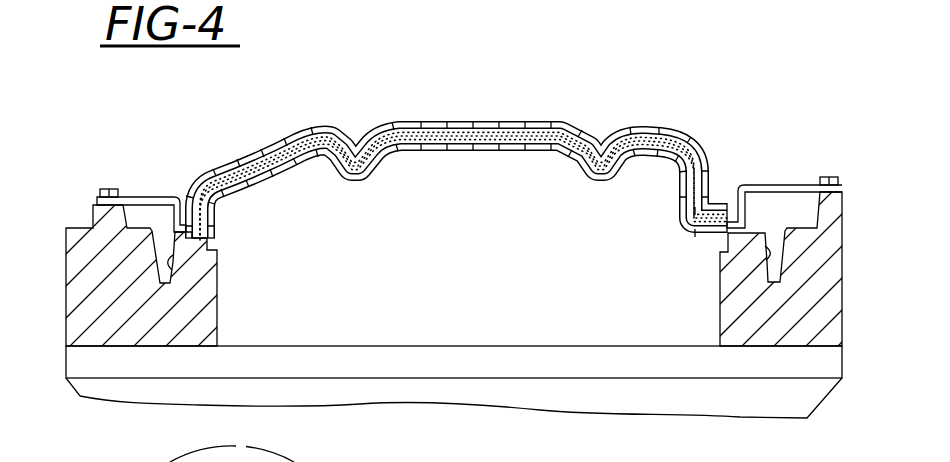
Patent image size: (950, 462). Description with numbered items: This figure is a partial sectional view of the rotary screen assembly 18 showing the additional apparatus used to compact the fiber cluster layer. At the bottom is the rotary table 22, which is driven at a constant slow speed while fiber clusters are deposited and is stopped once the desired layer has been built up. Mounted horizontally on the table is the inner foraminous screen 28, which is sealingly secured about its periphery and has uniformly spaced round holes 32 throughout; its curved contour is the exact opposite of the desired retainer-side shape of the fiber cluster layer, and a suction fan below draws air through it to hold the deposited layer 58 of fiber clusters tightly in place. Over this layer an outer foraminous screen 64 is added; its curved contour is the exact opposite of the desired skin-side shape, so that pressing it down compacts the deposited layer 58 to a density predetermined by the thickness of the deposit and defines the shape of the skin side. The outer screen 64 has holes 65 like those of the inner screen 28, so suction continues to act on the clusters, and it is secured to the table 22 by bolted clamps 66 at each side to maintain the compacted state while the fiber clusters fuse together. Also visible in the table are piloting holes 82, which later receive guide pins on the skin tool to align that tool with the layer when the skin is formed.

The rotary screen assembly 18 is at (61, 360).
The rotary table 22 is at (66, 260).
The inner foraminous screen 28 is at (418, 157).
The round holes 32 is at (523, 157).
The deposited layer of fiber clusters 58 is at (420, 140).
The outer foraminous screen 64 is at (537, 122).
The holes 65 is at (327, 127).
The bolted clamps 66 is at (143, 200).
The piloting holes 82 is at (172, 268).